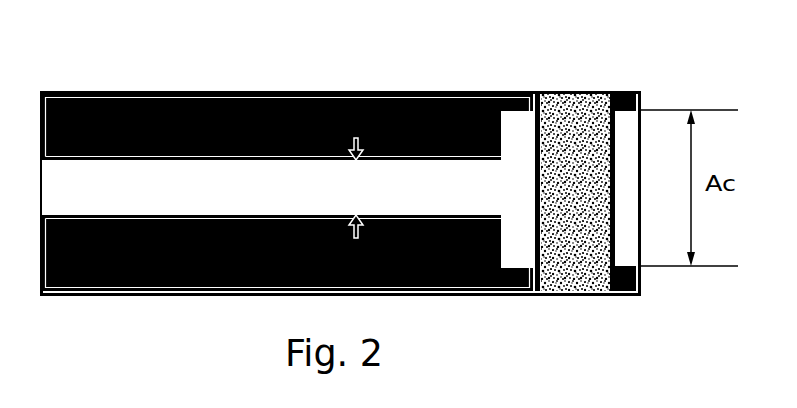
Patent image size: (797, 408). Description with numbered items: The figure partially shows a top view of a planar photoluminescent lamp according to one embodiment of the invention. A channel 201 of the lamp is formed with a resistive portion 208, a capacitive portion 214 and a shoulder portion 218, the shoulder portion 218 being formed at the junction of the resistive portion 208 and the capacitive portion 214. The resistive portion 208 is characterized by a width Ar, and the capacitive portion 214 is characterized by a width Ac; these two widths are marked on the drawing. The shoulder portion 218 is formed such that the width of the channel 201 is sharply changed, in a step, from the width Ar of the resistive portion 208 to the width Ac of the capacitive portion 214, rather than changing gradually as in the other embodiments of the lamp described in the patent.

The channel 201 is at (168, 152).
The resistive portion 208 is at (303, 173).
The shoulder portion 218 is at (493, 140).
The capacitive portion 214 is at (615, 185).